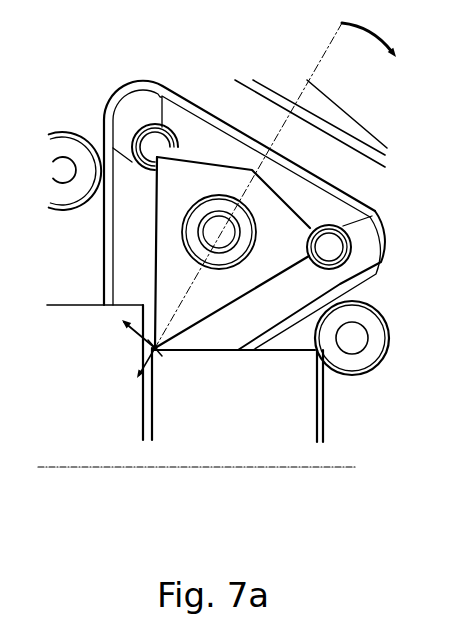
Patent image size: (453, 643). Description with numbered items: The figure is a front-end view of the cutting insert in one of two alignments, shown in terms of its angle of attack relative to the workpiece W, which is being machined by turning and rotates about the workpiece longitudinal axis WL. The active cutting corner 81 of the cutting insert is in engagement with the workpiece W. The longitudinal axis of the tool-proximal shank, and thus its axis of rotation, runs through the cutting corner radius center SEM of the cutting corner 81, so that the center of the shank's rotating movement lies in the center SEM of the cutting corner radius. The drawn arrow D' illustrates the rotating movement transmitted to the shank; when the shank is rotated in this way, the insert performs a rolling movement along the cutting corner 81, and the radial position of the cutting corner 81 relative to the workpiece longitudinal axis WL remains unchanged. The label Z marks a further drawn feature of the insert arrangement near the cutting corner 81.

The cutting corner 81 is at (150, 347).
The tool / tooth element Z is at (270, 253).
The cutting corner radius center SEM is at (160, 352).
The workpiece W is at (326, 406).
The workpiece longitudinal axis WL is at (196, 481).
The rotation direction D' is at (290, 185).